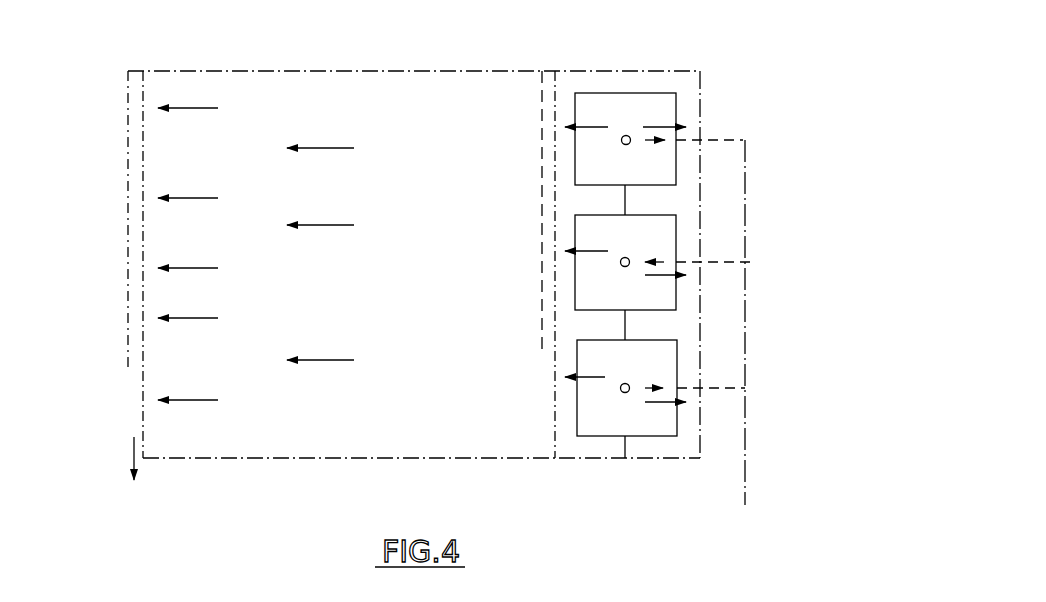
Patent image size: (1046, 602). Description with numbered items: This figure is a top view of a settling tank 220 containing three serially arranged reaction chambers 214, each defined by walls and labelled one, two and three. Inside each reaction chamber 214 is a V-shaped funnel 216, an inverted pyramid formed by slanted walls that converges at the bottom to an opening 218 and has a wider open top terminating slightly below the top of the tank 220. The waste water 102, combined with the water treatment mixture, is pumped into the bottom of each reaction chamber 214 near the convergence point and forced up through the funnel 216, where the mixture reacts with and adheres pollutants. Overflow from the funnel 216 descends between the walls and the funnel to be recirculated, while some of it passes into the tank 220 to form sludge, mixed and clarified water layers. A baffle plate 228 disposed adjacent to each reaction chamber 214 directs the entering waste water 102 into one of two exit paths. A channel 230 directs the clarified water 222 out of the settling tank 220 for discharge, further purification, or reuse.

The settling tank 220 is at (184, 70).
The clarified water layer 222 is at (313, 148).
The channel 230 is at (128, 160).
The reaction chamber 214 is at (645, 78).
The V-shaped funnel 216 is at (677, 93).
The opening 218 is at (627, 145).
The baffle plate 228 is at (620, 66).
The waste water 102 is at (745, 453).